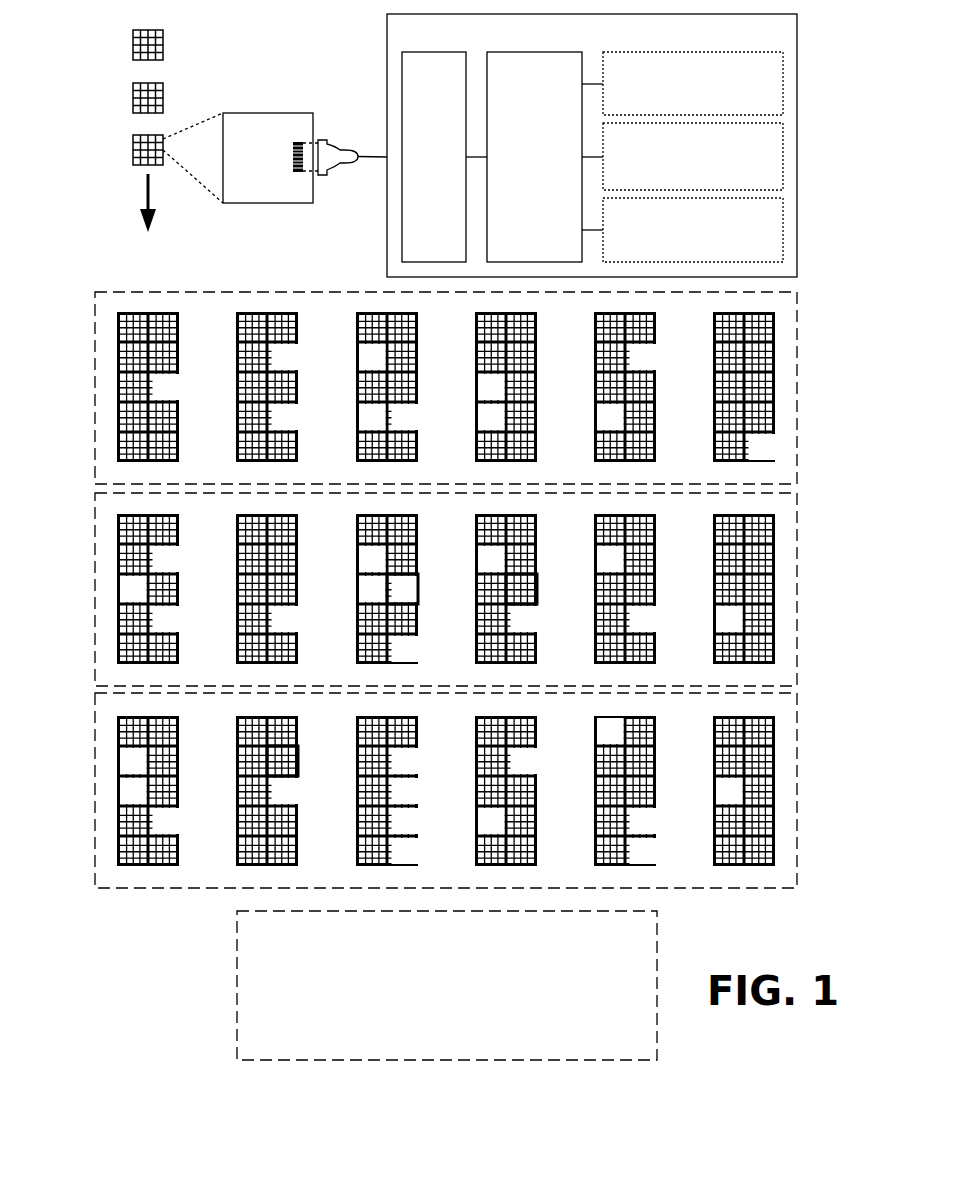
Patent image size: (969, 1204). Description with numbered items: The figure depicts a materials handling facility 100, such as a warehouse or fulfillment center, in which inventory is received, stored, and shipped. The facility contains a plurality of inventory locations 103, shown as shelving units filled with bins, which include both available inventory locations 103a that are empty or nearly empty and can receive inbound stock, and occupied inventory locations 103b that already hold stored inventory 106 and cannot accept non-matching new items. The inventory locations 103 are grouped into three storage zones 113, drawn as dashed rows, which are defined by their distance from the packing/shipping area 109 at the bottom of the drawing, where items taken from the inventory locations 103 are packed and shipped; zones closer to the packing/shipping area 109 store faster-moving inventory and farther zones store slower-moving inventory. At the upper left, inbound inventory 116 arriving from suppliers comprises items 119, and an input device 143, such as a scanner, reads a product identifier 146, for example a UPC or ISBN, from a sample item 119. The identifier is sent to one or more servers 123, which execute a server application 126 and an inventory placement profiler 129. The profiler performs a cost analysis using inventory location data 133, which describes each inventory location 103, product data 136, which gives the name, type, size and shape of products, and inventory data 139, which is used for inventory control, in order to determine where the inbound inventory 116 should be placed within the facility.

The materials handling facility 100 is at (139, 991).
The inventory locations 103 is at (674, 876).
The available inventory location 103a is at (398, 593).
The occupied inventory location 103b is at (567, 599).
The stored inventory 106 is at (287, 764).
The packing/shipping area 109 is at (447, 985).
The storage zones 113 is at (797, 396).
The inbound inventory 116 is at (133, 47).
The item 119 is at (237, 122).
The servers 123 is at (592, 145).
The server application 126 is at (434, 157).
The inventory placement profiler 129 is at (534, 157).
The inventory location data 133 is at (693, 83).
The product data 136 is at (693, 156).
The inventory data 139 is at (693, 230).
The input device 143 is at (323, 147).
The product identifier 146 is at (293, 155).